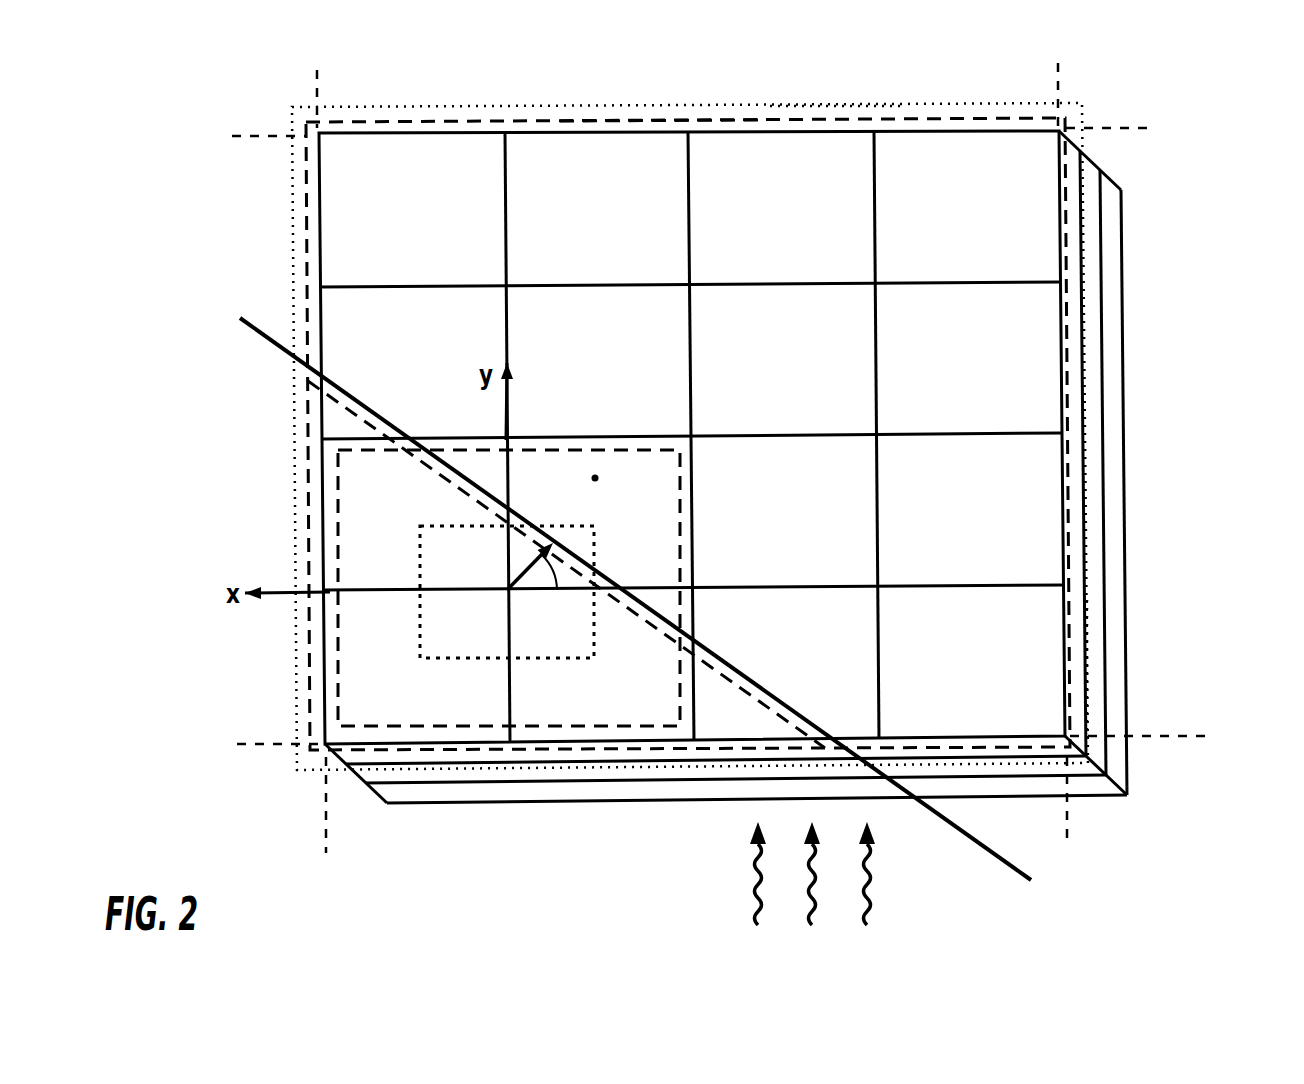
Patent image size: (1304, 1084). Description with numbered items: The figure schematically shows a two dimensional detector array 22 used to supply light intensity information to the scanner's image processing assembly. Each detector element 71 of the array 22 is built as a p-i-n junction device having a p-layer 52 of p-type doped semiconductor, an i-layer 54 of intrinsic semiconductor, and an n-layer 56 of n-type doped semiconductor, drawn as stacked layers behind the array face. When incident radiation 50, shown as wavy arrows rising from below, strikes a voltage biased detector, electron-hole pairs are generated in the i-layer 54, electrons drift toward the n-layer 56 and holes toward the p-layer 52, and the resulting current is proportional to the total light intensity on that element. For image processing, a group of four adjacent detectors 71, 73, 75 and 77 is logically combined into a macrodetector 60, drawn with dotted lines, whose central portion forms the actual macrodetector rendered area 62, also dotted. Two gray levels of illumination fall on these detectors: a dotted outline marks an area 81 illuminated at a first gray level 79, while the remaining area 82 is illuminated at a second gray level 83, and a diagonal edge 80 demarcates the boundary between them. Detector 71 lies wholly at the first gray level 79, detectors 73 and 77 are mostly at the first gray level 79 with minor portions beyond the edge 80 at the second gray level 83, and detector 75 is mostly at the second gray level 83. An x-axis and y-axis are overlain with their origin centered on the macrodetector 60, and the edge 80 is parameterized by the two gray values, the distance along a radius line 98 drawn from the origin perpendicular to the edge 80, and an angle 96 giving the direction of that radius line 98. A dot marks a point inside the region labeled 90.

The detector array 22 is at (1190, 116).
The incident radiation 50 is at (755, 888).
The p-layer 52 is at (1112, 473).
The i-layer 54 is at (1095, 417).
The n-layer 56 is at (1072, 372).
The macrodetector 60 is at (337, 565).
The macrodetector rendered area 62 is at (481, 589).
The detector element 71 is at (375, 684).
The detector 73 is at (653, 672).
The detector 75 is at (646, 528).
The detector 77 is at (378, 486).
The first gray level 79 is at (290, 423).
The edge 80 is at (256, 329).
The area illuminated at first gray level 81 is at (306, 505).
The remaining area 82 is at (632, 120).
The second gray level 83 is at (821, 104).
The image region 90 is at (596, 478).
The angle 96 is at (557, 590).
The radius line 98 is at (541, 551).